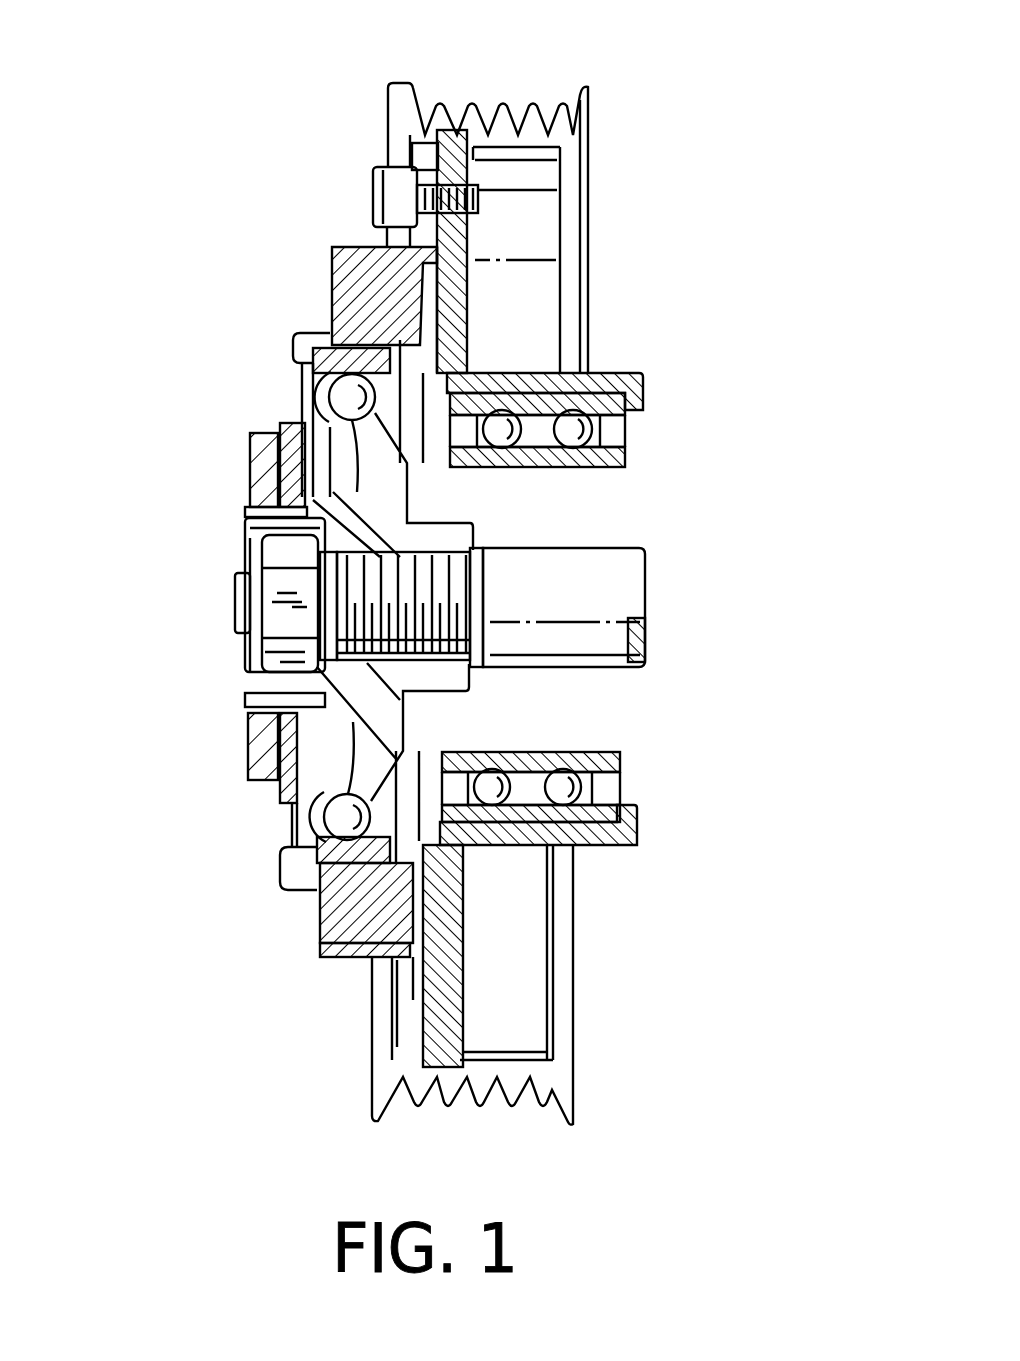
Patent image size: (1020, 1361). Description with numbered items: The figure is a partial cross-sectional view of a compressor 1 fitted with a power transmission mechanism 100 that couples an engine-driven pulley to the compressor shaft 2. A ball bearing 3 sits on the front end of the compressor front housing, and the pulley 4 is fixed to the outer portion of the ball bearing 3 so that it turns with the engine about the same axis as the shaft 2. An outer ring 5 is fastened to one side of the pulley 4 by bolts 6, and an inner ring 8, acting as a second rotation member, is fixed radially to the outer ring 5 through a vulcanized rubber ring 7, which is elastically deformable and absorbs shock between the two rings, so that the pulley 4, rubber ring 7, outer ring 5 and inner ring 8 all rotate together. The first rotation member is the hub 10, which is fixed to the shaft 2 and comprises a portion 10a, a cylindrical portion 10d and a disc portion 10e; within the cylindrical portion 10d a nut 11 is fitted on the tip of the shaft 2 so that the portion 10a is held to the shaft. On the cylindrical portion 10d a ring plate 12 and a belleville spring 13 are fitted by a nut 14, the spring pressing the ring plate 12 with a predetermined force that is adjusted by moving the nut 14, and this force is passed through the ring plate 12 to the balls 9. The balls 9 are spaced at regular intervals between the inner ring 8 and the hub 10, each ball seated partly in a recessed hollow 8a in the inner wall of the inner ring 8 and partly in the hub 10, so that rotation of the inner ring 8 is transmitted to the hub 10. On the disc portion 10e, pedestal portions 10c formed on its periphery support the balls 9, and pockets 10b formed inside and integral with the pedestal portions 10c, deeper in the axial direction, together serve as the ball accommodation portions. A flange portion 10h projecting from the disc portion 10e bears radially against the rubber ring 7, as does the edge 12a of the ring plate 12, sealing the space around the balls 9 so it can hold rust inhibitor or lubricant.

The power transmission mechanism 100 is at (222, 236).
The compressor 1 is at (690, 513).
The shaft 2 is at (550, 560).
The ball bearing 3 is at (537, 420).
The pulley 4 is at (473, 103).
The outer ring 5 is at (340, 957).
The bolts 6 is at (370, 192).
The rubber ring 7 is at (317, 913).
The inner ring 8 is at (330, 333).
The recessed hollows 8a is at (437, 347).
The balls 9 is at (330, 385).
The hub 10 is at (248, 718).
The portion 10a is at (470, 668).
The pockets 10b is at (300, 808).
The pedestal portions 10c is at (300, 825).
The cylindrical portion 10d is at (257, 547).
The disc portion 10e is at (487, 847).
The flange portion 10h is at (463, 850).
The nut 11 is at (243, 667).
The ring plate 12 is at (277, 427).
The race member 12a is at (330, 365).
The belleville spring 13 is at (250, 467).
The nut 14 is at (250, 497).